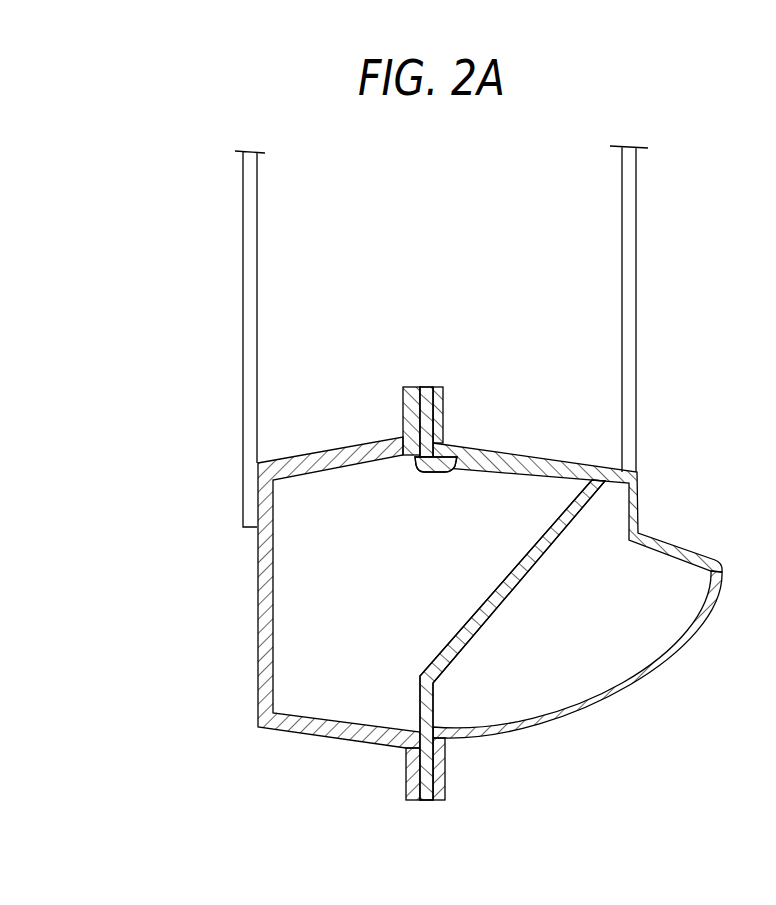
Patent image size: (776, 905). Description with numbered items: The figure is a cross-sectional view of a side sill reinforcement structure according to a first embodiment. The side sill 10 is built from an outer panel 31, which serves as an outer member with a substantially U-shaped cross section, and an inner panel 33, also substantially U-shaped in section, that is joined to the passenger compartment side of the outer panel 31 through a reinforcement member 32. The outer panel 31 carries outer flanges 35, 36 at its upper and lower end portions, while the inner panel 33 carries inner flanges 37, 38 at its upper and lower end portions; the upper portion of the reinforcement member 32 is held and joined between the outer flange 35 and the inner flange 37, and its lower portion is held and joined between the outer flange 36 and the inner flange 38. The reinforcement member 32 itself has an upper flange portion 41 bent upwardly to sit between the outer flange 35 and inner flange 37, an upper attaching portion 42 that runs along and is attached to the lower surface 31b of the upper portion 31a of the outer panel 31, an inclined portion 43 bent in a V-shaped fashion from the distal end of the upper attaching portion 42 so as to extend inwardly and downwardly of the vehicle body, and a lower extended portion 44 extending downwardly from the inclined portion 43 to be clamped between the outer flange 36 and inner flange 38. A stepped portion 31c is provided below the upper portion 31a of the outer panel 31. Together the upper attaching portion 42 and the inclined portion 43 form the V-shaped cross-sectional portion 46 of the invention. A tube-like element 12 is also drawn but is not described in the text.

The side sill 10 is at (246, 552).
The support tube 12 is at (636, 263).
The outer panel 31 is at (430, 578).
The upper portion of the outer panel 31a is at (515, 450).
The lower surface 31b is at (462, 474).
The stepped portion 31c is at (672, 537).
The reinforcement member 32 is at (522, 600).
The inner panel 33 is at (258, 667).
The outer flange 35 is at (443, 417).
The outer flange 36 is at (445, 767).
The inner flange 37 is at (403, 412).
The inner flange 38 is at (406, 766).
The upper flange portion 41 is at (420, 387).
The upper attaching portion 42 is at (497, 483).
The inclined portion 43 is at (467, 613).
The lower extended portion 44 is at (415, 702).
The V-shaped cross-sectional portion 46 is at (372, 532).